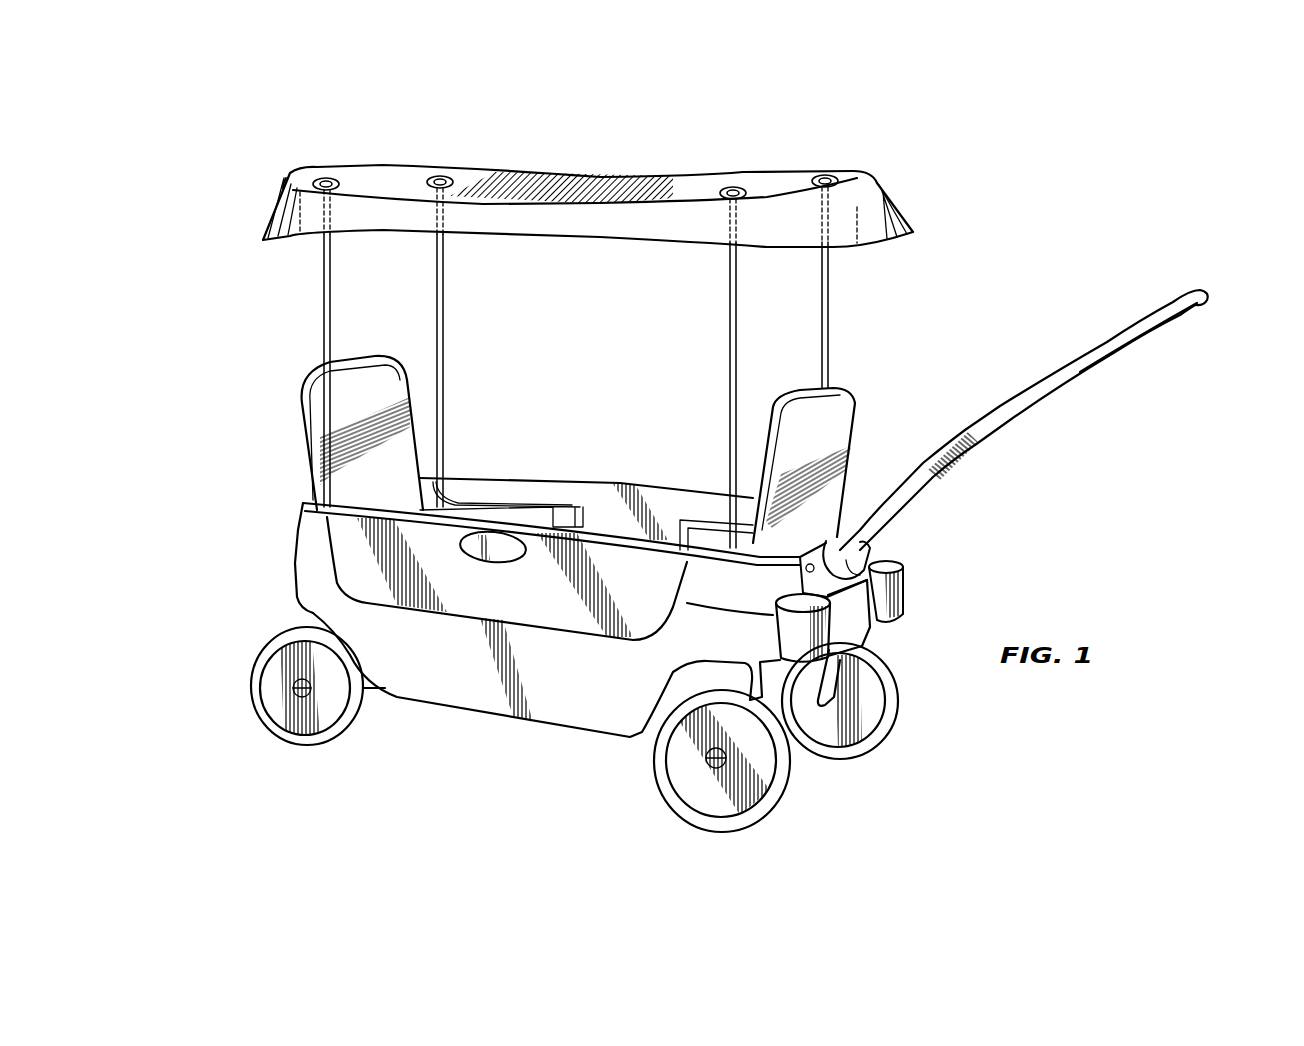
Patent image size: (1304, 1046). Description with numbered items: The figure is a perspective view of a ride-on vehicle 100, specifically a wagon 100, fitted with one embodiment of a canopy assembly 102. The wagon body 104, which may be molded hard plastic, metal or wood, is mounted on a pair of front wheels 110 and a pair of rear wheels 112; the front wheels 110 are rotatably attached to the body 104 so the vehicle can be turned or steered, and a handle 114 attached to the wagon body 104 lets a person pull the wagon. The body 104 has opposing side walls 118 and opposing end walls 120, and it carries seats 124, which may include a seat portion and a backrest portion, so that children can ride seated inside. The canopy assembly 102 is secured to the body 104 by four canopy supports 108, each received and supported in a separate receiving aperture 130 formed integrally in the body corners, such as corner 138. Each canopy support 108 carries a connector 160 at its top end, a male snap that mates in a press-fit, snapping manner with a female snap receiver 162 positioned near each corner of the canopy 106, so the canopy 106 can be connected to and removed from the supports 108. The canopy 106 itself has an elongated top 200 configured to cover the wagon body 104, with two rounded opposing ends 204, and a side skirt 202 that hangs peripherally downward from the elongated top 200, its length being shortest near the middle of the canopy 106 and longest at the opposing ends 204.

The ride-on vehicle 100 is at (467, 763).
The canopy assembly 102 is at (779, 118).
The wagon body 104 is at (903, 587).
The canopy 106 is at (503, 170).
The canopy support 108 is at (323, 310).
The front wheel 110 is at (887, 740).
The rear wheel 112 is at (270, 723).
The handle 114 is at (1207, 290).
The side wall 118 is at (620, 480).
The end wall 120 is at (300, 523).
The seat 124 is at (300, 395).
The receiving aperture 130 is at (447, 477).
The corner 138 is at (840, 520).
The connector 160 is at (327, 192).
The receiver 162 is at (331, 186).
The elongated top 200 is at (647, 187).
The side skirt 202 is at (277, 213).
The rounded opposing end 204 is at (300, 168).